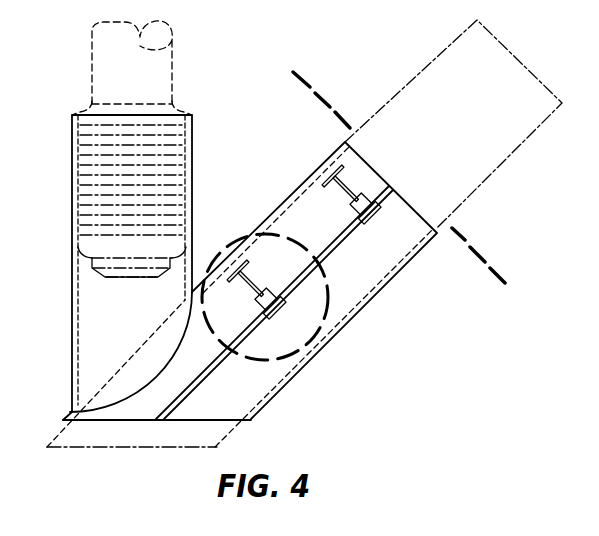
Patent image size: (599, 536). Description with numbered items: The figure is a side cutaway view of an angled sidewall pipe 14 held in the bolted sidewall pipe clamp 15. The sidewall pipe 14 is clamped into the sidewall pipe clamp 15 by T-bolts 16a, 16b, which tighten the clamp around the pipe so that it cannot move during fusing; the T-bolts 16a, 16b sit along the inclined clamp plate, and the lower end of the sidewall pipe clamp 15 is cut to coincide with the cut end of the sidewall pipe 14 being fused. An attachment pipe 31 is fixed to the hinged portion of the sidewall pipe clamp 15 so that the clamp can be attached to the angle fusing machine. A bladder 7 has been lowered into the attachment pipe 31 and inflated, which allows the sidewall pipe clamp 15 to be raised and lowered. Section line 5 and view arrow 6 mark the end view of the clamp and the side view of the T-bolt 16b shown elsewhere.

The bladder 7 is at (92, 63).
The attachment pipe 31 is at (72, 280).
The sidewall pipe clamp 15 is at (262, 414).
The sidewall pipe 14 is at (540, 125).
The T-bolt 16a is at (273, 322).
The T-bolt 16b is at (367, 228).
The section line 5- 5 is at (322, 100).
The detail view 6 arrow 6 is at (327, 313).